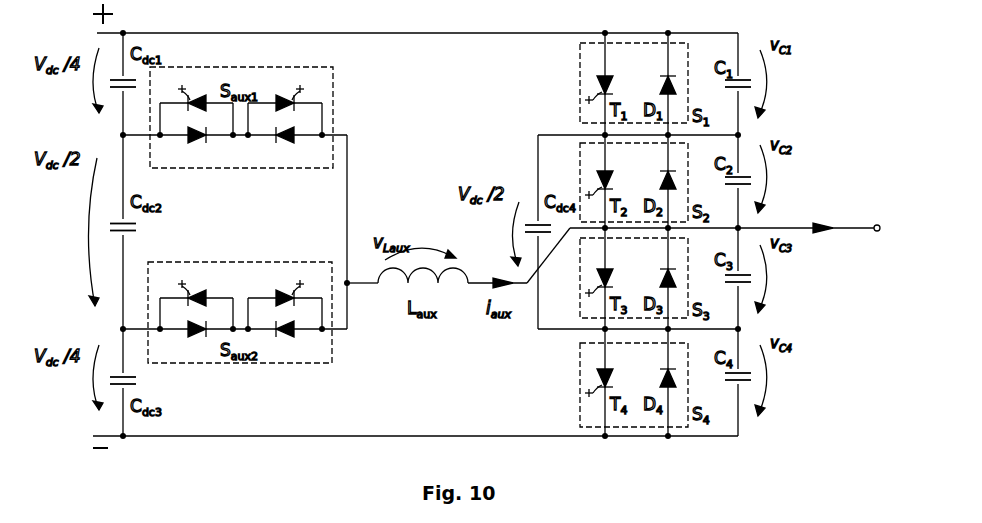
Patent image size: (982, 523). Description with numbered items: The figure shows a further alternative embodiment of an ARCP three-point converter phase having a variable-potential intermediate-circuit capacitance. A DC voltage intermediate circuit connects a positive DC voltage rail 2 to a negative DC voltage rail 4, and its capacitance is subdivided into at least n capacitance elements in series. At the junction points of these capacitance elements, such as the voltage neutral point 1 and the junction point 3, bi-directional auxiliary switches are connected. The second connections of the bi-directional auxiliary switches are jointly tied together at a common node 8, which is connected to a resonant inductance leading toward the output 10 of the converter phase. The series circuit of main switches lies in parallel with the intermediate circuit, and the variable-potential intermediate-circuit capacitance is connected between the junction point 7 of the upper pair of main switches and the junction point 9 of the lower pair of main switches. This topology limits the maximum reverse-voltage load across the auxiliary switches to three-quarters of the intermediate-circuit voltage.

The voltage neutral point 1 is at (112, 136).
The positive DC voltage rail 2 is at (426, 25).
The second DC-link node 3 is at (112, 330).
The negative DC voltage rail 4 is at (421, 461).
The junction point 7 is at (732, 123).
The auxiliary circuit node 8 is at (359, 277).
The junction point 9 is at (732, 317).
The output 10 is at (858, 261).